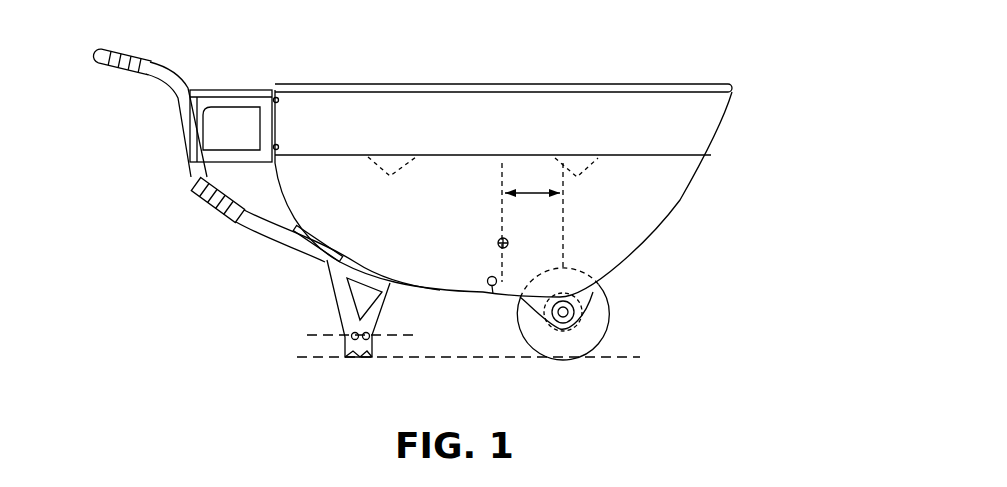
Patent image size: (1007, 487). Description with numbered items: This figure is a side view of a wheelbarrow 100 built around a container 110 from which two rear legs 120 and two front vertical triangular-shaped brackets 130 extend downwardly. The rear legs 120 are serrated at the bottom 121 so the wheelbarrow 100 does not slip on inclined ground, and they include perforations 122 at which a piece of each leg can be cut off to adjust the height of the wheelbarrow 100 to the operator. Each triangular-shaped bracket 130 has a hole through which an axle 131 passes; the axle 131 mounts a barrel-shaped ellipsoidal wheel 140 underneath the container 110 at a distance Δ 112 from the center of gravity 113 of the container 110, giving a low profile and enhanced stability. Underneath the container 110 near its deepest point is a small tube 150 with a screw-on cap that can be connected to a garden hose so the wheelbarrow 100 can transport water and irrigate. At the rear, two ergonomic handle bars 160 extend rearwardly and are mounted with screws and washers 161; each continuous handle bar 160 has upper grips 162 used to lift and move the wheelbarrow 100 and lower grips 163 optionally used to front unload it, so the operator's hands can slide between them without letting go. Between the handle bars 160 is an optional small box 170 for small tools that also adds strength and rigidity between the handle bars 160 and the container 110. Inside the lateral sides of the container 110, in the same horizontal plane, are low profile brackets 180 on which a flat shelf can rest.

The wheelbarrow 100 is at (742, 72).
The container 110 is at (673, 213).
The distance Δ 112 is at (531, 156).
The center of gravity (CoG) 113 is at (497, 245).
The rear legs 120 is at (331, 277).
The serrated bottom 121 is at (362, 359).
The perforations 122 is at (365, 331).
The vertical triangular-shaped brackets 130 is at (592, 288).
The axle 131 is at (572, 310).
The wheel 140 is at (603, 312).
The small tube 150 is at (493, 297).
The handle bars 160 is at (156, 158).
The screws and washers 161 is at (279, 100).
The upper grips 162 is at (114, 71).
The lower grips 163 is at (221, 222).
The small box 170 is at (221, 90).
The low profile brackets 180 is at (398, 155).